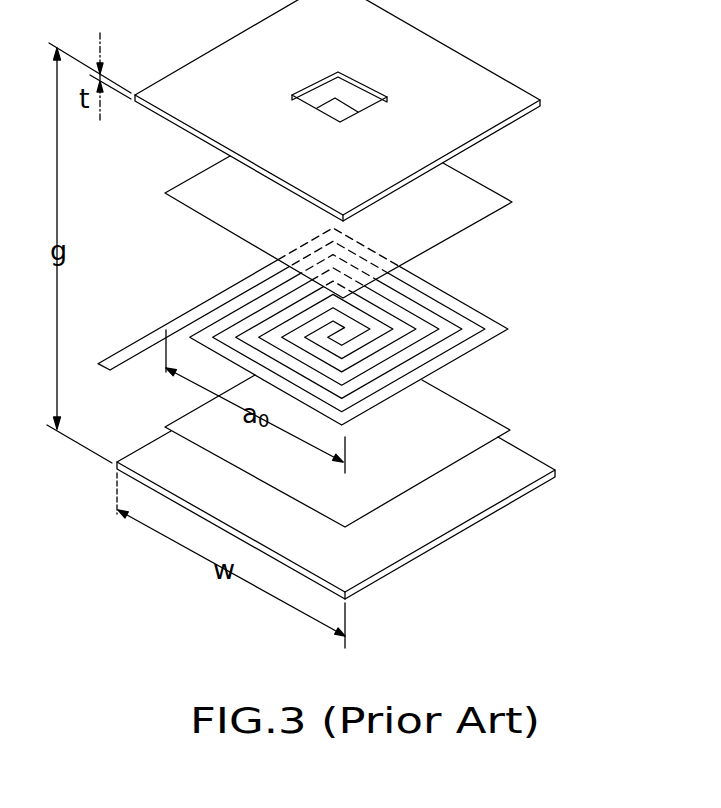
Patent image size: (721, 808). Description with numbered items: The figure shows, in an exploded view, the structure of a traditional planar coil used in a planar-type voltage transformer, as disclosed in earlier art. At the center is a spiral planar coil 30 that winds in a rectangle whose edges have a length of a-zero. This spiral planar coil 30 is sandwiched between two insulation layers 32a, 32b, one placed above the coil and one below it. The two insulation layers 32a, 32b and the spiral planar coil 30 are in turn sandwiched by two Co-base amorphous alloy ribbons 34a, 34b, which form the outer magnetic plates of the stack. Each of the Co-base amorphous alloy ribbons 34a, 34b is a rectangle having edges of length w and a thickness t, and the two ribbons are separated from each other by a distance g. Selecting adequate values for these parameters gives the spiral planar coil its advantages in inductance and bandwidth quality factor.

The Co-base amorphous alloy ribbon 34a is at (512, 97).
The insulation layer 32a is at (487, 200).
The spiral planar coil 30 is at (508, 330).
The insulation layer 32b is at (480, 424).
The Co-base amorphous alloy ribbon 34b is at (530, 468).